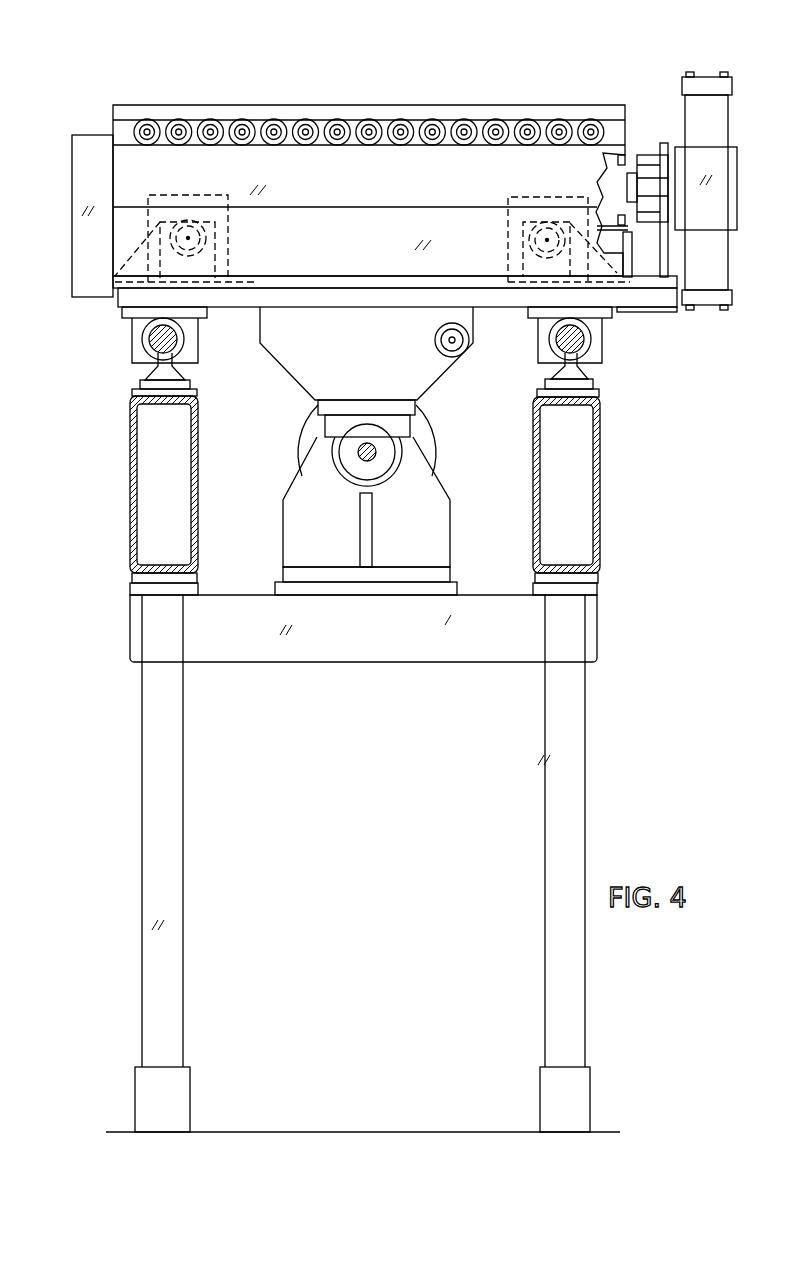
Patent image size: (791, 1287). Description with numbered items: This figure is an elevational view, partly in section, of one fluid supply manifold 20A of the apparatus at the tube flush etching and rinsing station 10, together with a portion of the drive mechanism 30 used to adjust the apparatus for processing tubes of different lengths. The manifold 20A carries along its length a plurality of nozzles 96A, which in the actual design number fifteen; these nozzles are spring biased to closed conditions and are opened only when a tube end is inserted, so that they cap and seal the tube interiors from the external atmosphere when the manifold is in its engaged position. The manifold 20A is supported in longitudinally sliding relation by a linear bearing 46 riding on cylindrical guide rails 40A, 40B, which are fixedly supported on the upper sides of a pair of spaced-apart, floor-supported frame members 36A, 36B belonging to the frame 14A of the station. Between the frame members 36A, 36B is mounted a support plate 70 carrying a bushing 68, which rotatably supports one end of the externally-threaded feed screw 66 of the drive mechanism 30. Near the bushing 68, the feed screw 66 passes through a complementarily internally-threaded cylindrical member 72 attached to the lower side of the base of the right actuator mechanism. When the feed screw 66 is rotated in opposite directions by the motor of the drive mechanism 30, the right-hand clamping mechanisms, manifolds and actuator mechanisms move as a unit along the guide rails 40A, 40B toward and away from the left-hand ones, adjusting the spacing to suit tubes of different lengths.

The tube flush etching and rinsing station 10 is at (630, 56).
The nozzles 96A is at (203, 115).
The fluid supply manifold 20A is at (327, 173).
The linear bearing 46 is at (138, 322).
The cylindrical guide rail 40B is at (158, 352).
The cylindrical guide rail 40A is at (580, 350).
The internally-threaded cylindrical member 72 is at (338, 463).
The bushing 68 is at (427, 433).
The feed screw 66 is at (363, 457).
The drive mechanism 30 is at (405, 472).
The frame member 36A is at (600, 465).
The frame member 36B is at (130, 532).
The frame 14A is at (380, 719).
The support plate 70 is at (467, 652).